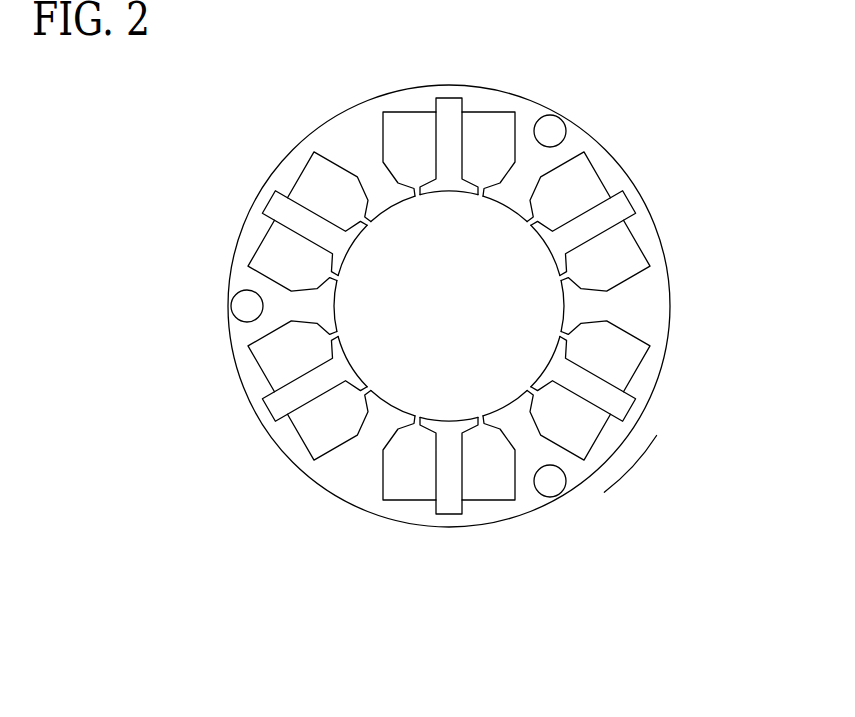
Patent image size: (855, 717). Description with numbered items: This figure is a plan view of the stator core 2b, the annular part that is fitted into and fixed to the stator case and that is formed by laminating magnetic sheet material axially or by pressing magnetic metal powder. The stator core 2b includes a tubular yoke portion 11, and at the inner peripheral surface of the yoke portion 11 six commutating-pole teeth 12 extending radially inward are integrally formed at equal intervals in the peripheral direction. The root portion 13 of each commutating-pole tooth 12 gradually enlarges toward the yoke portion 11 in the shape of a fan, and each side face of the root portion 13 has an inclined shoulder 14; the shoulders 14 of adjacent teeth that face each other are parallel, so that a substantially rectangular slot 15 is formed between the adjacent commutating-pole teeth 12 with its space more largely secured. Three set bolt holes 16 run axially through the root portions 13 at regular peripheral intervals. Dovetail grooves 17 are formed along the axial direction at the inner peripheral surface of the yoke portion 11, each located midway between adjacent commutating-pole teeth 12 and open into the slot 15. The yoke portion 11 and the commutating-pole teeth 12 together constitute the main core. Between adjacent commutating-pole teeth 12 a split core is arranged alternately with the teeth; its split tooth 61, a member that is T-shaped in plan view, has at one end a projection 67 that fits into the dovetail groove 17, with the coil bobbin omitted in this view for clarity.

The stator core 2b is at (643, 417).
The yoke portion 11 is at (612, 167).
The commutating-pole tooth 12 is at (512, 180).
The root portion 13 is at (562, 153).
The inclined shoulder 14 is at (625, 270).
The slot 15 is at (622, 358).
The set bolt hole 16 is at (563, 122).
The dovetail groove 17 is at (448, 505).
The split tooth 61 is at (596, 390).
The projection 67 is at (623, 202).